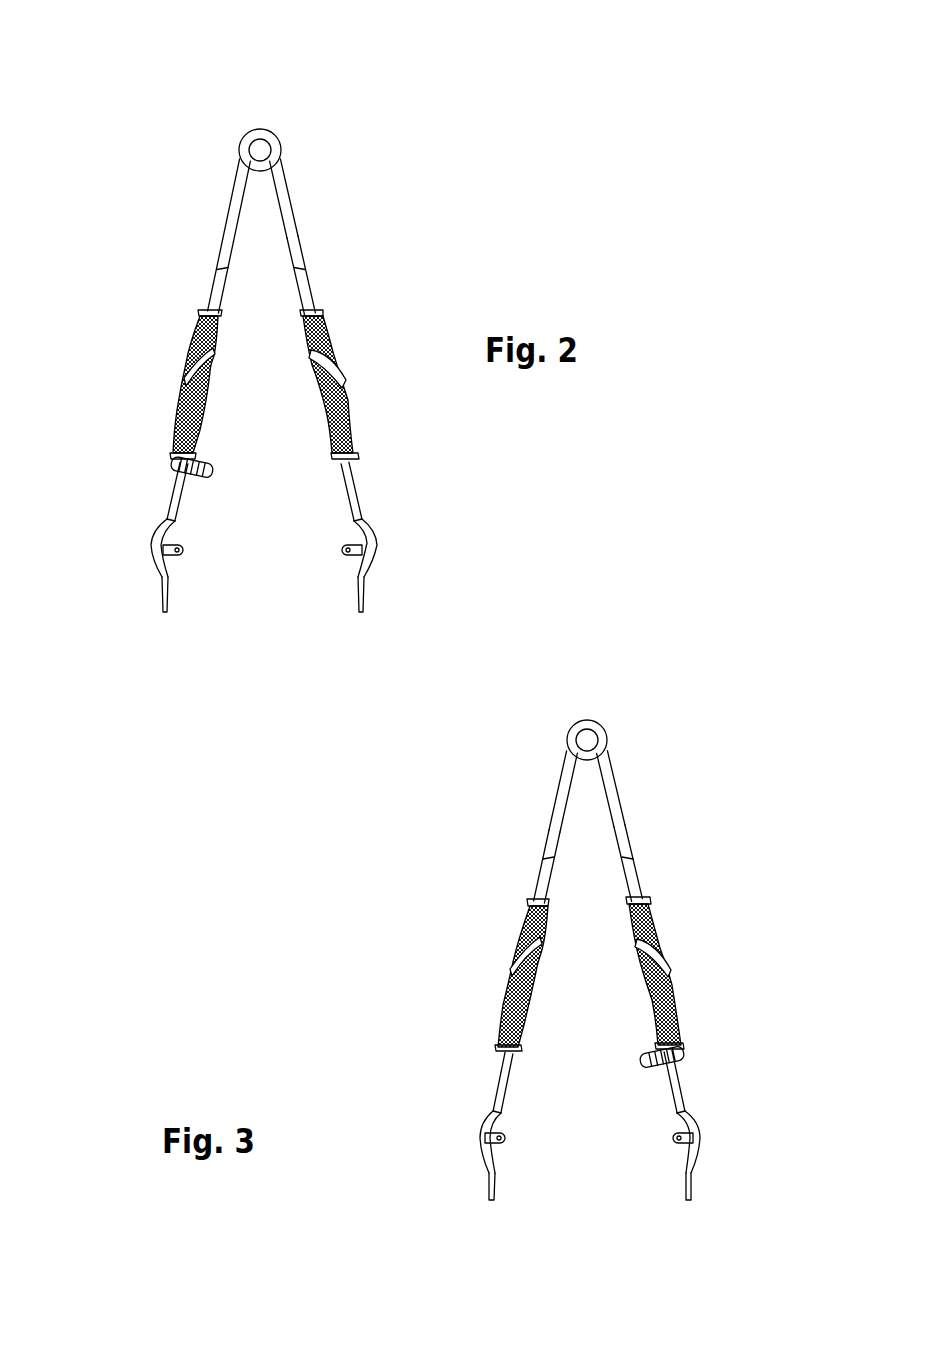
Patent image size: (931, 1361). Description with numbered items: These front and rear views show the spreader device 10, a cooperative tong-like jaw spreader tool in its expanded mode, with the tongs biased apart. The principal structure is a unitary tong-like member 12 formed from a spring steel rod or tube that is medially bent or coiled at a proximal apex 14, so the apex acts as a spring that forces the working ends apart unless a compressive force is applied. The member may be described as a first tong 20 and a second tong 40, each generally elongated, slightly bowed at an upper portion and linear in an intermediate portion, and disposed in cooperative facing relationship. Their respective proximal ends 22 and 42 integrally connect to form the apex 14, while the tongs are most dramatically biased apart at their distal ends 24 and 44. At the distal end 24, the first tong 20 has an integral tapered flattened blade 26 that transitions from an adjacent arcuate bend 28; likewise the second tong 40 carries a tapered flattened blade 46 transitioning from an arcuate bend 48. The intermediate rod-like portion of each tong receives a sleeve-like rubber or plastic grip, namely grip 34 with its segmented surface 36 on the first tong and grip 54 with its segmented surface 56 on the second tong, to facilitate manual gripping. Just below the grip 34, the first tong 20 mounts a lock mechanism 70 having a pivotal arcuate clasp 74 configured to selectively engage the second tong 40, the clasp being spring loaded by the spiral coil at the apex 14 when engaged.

In FIG. 2, the spreader device 10 is at (241, 86).
In FIG. 3, the spreader device 10 is at (590, 624).
In FIG. 2, the unitary tong-like member 12 is at (223, 222).
In FIG. 3, the unitary tong-like member 12 is at (548, 835).
In FIG. 2, the proximal apex 14 is at (273, 132).
In FIG. 3, the proximal apex 14 is at (585, 719).
In FIG. 2, the first tong 20 is at (213, 283).
In FIG. 3, the first tong 20 is at (628, 822).
In FIG. 3, the proximal end of first tong 22 is at (605, 740).
In FIG. 2, the distal end of first tong 24 is at (165, 612).
In FIG. 3, the distal end of first tong 24 is at (694, 1198).
In FIG. 2, the tapered flattened blade 26 is at (165, 595).
In FIG. 3, the tapered flattened blade 26 is at (688, 1188).
In FIG. 2, the arcuate bend 28 is at (160, 552).
In FIG. 2, the grip 34 is at (186, 364).
In FIG. 3, the grip 34 is at (665, 948).
In FIG. 2, the segmented surface 36 is at (182, 410).
In FIG. 2, the second tong 40 is at (352, 475).
In FIG. 3, the second tong 40 is at (560, 797).
In FIG. 2, the proximal end of second tong 42 is at (279, 152).
In FIG. 2, the distal end of second tong 44 is at (363, 612).
In FIG. 3, the distal end of second tong 44 is at (487, 1198).
In FIG. 2, the tapered flattened blade 46 is at (364, 596).
In FIG. 3, the tapered flattened blade 46 is at (496, 1193).
In FIG. 2, the arcuate bend 48 is at (368, 533).
In FIG. 2, the grip 54 is at (342, 372).
In FIG. 3, the grip 54 is at (512, 950).
In FIG. 2, the segmented surface 56 is at (355, 420).
In FIG. 2, the lock mechanism 70 is at (163, 459).
In FIG. 3, the lock mechanism 70 is at (690, 1056).
In FIG. 2, the pivotal arcuate clasp 74 is at (205, 472).
In FIG. 3, the pivotal arcuate clasp 74 is at (650, 1057).